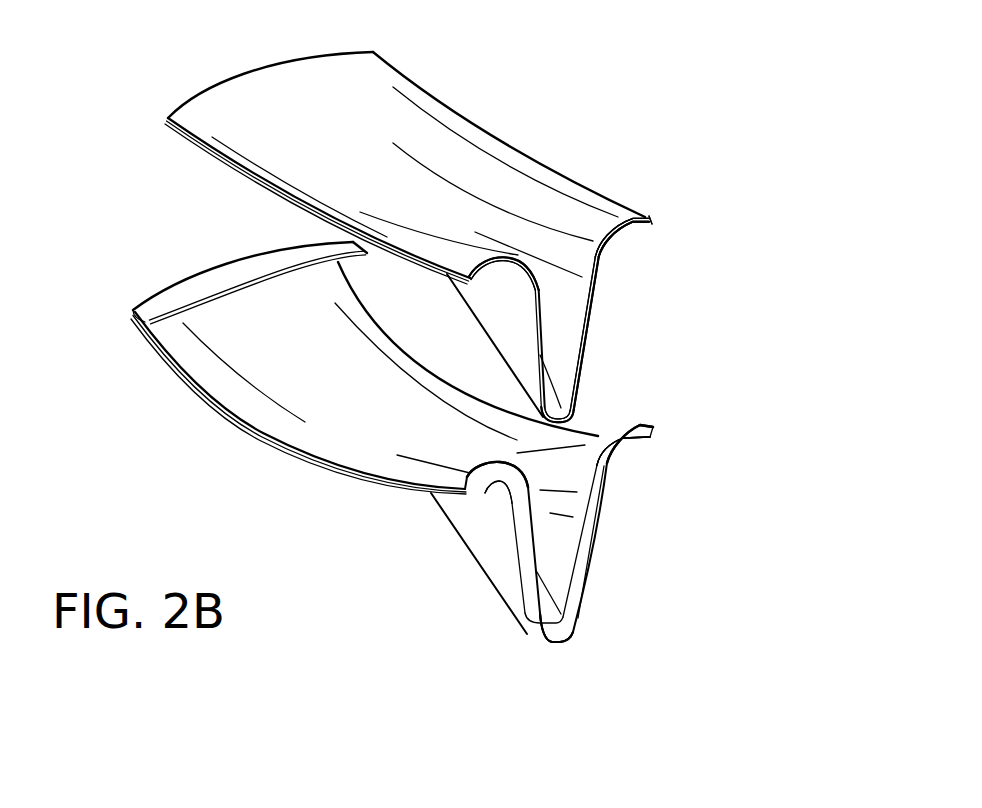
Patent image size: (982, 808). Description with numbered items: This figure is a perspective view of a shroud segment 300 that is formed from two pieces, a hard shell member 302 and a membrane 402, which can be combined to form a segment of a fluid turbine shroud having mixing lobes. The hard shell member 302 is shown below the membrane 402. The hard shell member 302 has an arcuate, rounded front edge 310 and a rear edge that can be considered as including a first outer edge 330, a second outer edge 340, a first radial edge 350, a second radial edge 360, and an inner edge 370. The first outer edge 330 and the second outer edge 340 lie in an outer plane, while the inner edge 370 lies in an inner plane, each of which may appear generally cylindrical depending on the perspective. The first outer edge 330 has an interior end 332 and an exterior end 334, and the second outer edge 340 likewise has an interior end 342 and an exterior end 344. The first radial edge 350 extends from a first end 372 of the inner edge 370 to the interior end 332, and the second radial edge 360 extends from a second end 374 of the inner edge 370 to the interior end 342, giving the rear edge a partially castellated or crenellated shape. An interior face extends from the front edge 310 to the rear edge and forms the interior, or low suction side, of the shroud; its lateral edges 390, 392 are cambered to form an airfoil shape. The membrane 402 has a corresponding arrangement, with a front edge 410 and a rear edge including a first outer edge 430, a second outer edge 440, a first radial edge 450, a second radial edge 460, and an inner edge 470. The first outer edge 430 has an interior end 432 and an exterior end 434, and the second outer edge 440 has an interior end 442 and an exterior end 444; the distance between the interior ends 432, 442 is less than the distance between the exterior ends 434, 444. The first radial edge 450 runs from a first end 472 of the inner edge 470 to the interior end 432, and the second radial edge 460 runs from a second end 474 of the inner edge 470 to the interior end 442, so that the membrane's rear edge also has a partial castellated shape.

The shroud segment 300 is at (158, 485).
The hard shell member 302 is at (187, 352).
The front edge 310 is at (218, 265).
The first outer edge 330 is at (492, 497).
The interior end 332 is at (514, 548).
The exterior end 334 is at (484, 494).
The second outer edge 340 is at (613, 447).
The interior end 342 is at (610, 457).
The exterior end 344 is at (637, 438).
The first radial edge 350 is at (520, 587).
The second radial edge 360 is at (597, 540).
The inner edge 370 is at (556, 644).
The first end 372 is at (530, 638).
The second end 374 is at (582, 625).
The lateral edge 390 is at (210, 398).
The lateral edge 392 is at (597, 436).
The membrane 402 is at (243, 117).
The front edge 410 is at (276, 58).
The first outer edge 430 is at (516, 259).
The interior end 432 is at (537, 287).
The exterior end 434 is at (470, 277).
The second outer edge 440 is at (632, 217).
The interior end 442 is at (601, 207).
The exterior end 444 is at (652, 221).
The first radial edge 450 is at (600, 237).
The second radial edge 460 is at (588, 320).
The inner edge 470 is at (538, 355).
The first end 472 is at (535, 420).
The second end 474 is at (583, 420).